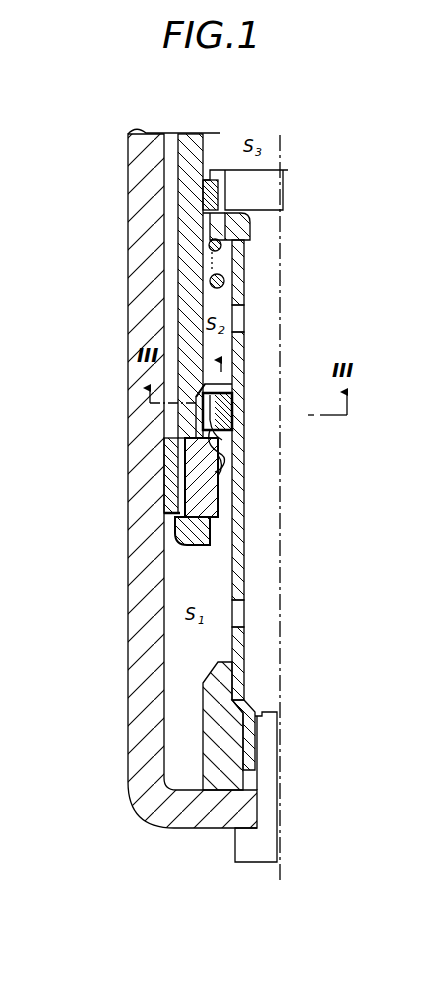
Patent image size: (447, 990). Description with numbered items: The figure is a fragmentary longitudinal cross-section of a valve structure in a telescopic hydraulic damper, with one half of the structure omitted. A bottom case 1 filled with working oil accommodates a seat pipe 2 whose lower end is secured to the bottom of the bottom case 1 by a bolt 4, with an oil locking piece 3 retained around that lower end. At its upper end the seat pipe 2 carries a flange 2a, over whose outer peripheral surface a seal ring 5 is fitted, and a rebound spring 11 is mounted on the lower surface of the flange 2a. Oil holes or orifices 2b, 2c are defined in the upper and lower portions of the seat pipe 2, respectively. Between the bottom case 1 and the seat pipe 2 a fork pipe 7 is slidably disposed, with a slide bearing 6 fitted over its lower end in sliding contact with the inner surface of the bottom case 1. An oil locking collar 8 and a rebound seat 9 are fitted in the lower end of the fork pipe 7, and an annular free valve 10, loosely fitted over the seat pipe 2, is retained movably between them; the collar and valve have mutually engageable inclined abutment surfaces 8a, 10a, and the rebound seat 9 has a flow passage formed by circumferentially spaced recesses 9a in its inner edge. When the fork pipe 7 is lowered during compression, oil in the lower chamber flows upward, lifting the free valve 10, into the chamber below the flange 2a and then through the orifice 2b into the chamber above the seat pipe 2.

The bottom case 1 is at (145, 615).
The seat pipe 2 is at (244, 585).
The flange 2a is at (224, 229).
The oil hole or orifice 2b is at (240, 318).
The oil hole or orifice 2c is at (244, 617).
The oil locking piece 3 is at (226, 752).
The bolt 4 is at (260, 845).
The seal ring 5 is at (222, 193).
The slide bearing 6 is at (164, 488).
The fork pipe 7 is at (187, 288).
The oil locking collar 8 is at (216, 517).
The abutment surface 8a is at (220, 464).
The rebound seat 9 is at (180, 408).
The recesses 9a is at (195, 383).
The free valve 10 is at (235, 418).
The abutment surface 10a is at (228, 428).
The rebound spring 11 is at (222, 267).